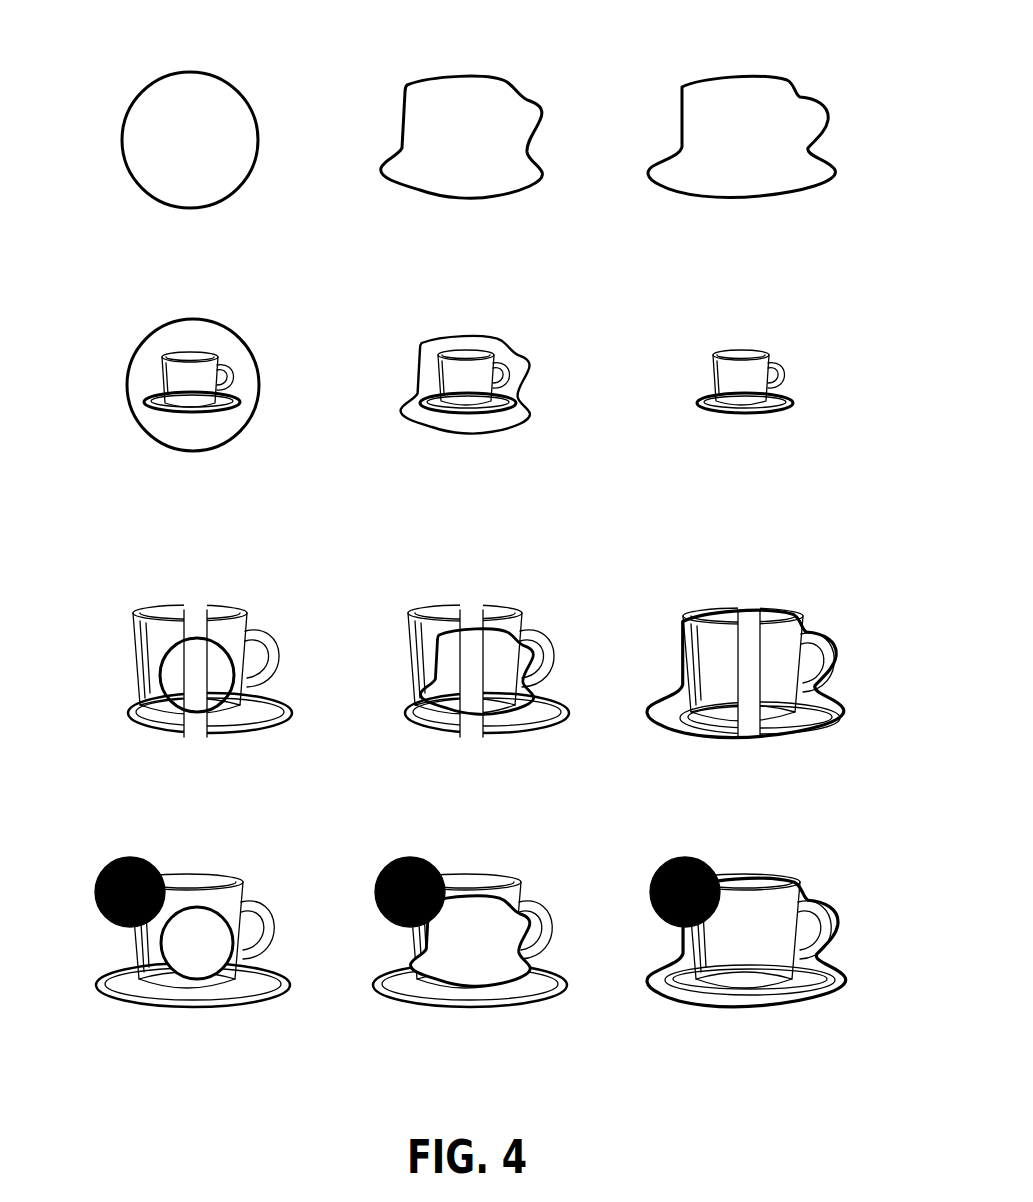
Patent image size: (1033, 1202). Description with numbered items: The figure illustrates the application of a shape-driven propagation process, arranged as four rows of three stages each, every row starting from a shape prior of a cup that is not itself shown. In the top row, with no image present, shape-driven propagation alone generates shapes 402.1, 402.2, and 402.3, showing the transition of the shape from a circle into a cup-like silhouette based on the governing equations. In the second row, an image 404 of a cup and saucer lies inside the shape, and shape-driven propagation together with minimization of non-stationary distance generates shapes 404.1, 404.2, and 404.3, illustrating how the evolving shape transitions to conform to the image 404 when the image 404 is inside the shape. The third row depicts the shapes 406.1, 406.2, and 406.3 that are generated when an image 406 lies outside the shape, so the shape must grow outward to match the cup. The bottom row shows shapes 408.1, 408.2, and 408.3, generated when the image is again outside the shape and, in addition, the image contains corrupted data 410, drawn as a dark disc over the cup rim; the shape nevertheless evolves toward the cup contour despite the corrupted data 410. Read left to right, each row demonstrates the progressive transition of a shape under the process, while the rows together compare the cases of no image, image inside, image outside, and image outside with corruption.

The shape 402.1 is at (243, 88).
The shape 402.2 is at (508, 80).
The shape 402.3 is at (790, 75).
The image 404 is at (160, 415).
The shape 404.1 is at (213, 380).
The shape 404.2 is at (513, 345).
The shape 404.3 is at (790, 360).
The image 406 is at (130, 735).
The shape 406.1 is at (192, 694).
The shape 406.2 is at (515, 630).
The shape 406.3 is at (793, 605).
The shape 408.1 is at (177, 931).
The shape 408.2 is at (520, 890).
The shape 408.3 is at (810, 893).
The corrupted data 410 is at (103, 925).